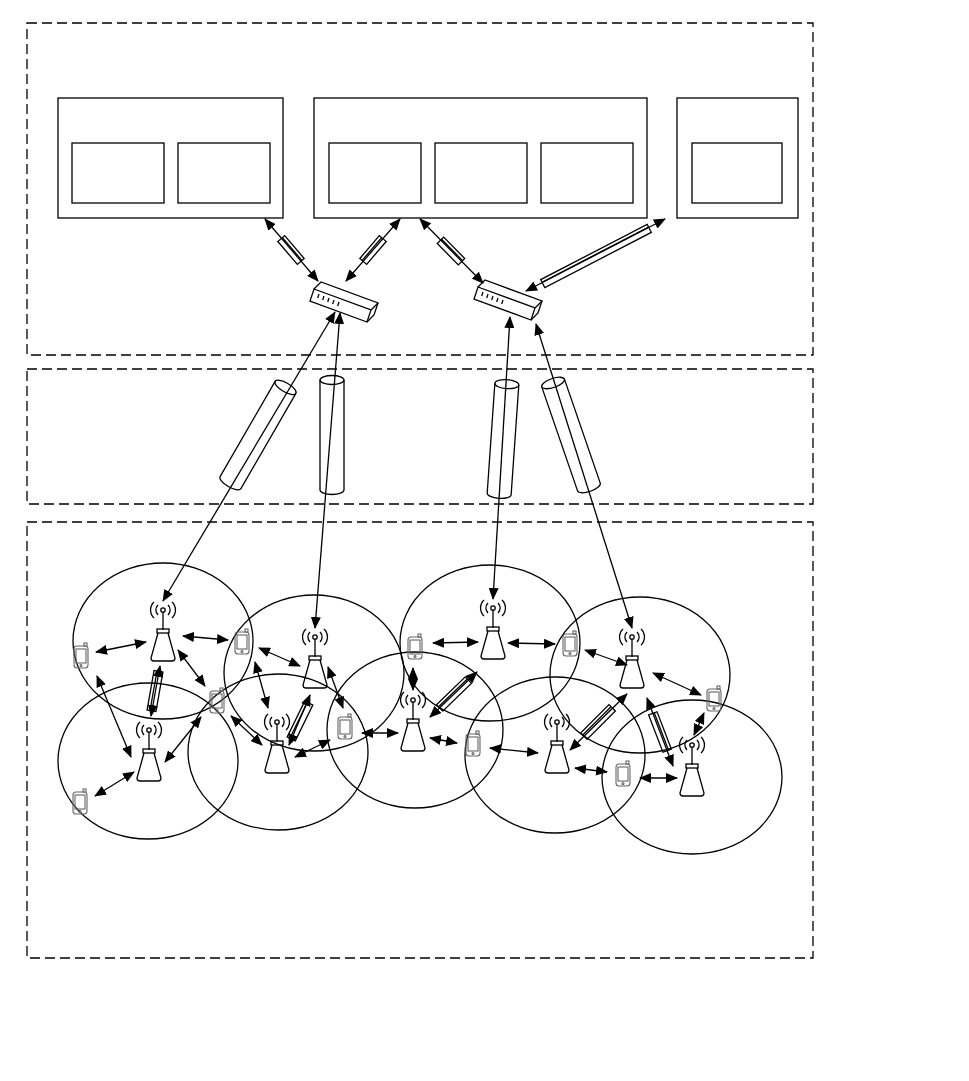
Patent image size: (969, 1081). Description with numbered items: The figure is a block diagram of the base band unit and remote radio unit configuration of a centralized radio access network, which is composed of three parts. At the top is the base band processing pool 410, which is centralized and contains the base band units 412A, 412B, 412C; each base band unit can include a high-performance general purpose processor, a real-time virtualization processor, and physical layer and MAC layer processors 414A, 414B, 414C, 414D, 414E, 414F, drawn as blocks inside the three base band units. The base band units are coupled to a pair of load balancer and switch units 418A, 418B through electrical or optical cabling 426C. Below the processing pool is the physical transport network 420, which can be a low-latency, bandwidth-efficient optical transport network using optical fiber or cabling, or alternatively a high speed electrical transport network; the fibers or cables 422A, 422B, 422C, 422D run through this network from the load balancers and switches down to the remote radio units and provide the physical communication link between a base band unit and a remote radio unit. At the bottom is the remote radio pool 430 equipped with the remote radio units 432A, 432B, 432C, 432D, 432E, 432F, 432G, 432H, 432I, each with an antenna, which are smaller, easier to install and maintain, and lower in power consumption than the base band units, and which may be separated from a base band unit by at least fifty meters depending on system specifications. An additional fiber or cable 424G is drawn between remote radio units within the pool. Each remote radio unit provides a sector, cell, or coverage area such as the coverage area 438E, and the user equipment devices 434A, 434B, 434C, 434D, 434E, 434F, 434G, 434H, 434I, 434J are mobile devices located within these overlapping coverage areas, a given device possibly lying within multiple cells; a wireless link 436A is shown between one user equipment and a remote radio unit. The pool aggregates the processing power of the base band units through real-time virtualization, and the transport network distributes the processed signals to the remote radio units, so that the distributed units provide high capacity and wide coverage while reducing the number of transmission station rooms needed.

The base band processing pool 410 is at (420, 521).
The base band unit 412A is at (170, 158).
The base band unit 412B is at (480, 158).
The base band unit 412C is at (737, 158).
The PHY layer processor and/or MAC layer processor 414A is at (118, 173).
The PHY layer processor and/or MAC layer processor 414B is at (224, 173).
The PHY layer processor and/or MAC layer processor 414C is at (375, 173).
The PHY layer processor and/or MAC layer processor 414D is at (481, 173).
The PHY layer processor and/or MAC layer processor 414E is at (587, 173).
The PHY layer processor and/or MAC layer processor 414F is at (737, 173).
The load balancer and switch 418A is at (312, 297).
The load balancer and switch 418B is at (544, 311).
The electrical or optical cabling 426C is at (458, 243).
The physical transport network 420 is at (420, 436).
The fiber or cable 422A is at (268, 396).
The fiber or cable 422B is at (346, 400).
The fiber or cable 422C is at (490, 445).
The fiber or cable 422D is at (590, 445).
The remote radio pool 430 is at (420, 740).
The remote radio unit 432A is at (149, 782).
The remote radio unit 432B is at (277, 774).
The remote radio unit 432C is at (413, 752).
The remote radio unit 432D is at (557, 774).
The remote radio unit 432E is at (692, 797).
The remote radio unit 432F is at (645, 672).
The remote radio unit 432G is at (503, 633).
The remote radio unit 432H is at (322, 660).
The remote radio unit 432I is at (158, 632).
The user equipment 434A is at (75, 655).
The user equipment 434B is at (80, 816).
The user equipment 434C is at (347, 742).
The user equipment 434D is at (473, 759).
The user equipment 434E is at (618, 788).
The user equipment 434F is at (722, 702).
The user equipment 434G is at (574, 631).
The user equipment 434H is at (410, 636).
The user equipment 434I is at (246, 630).
The user equipment 434J is at (219, 714).
The fiber or cable 424G is at (480, 690).
The wireless link 436A is at (110, 738).
The coverage area 438E is at (735, 846).